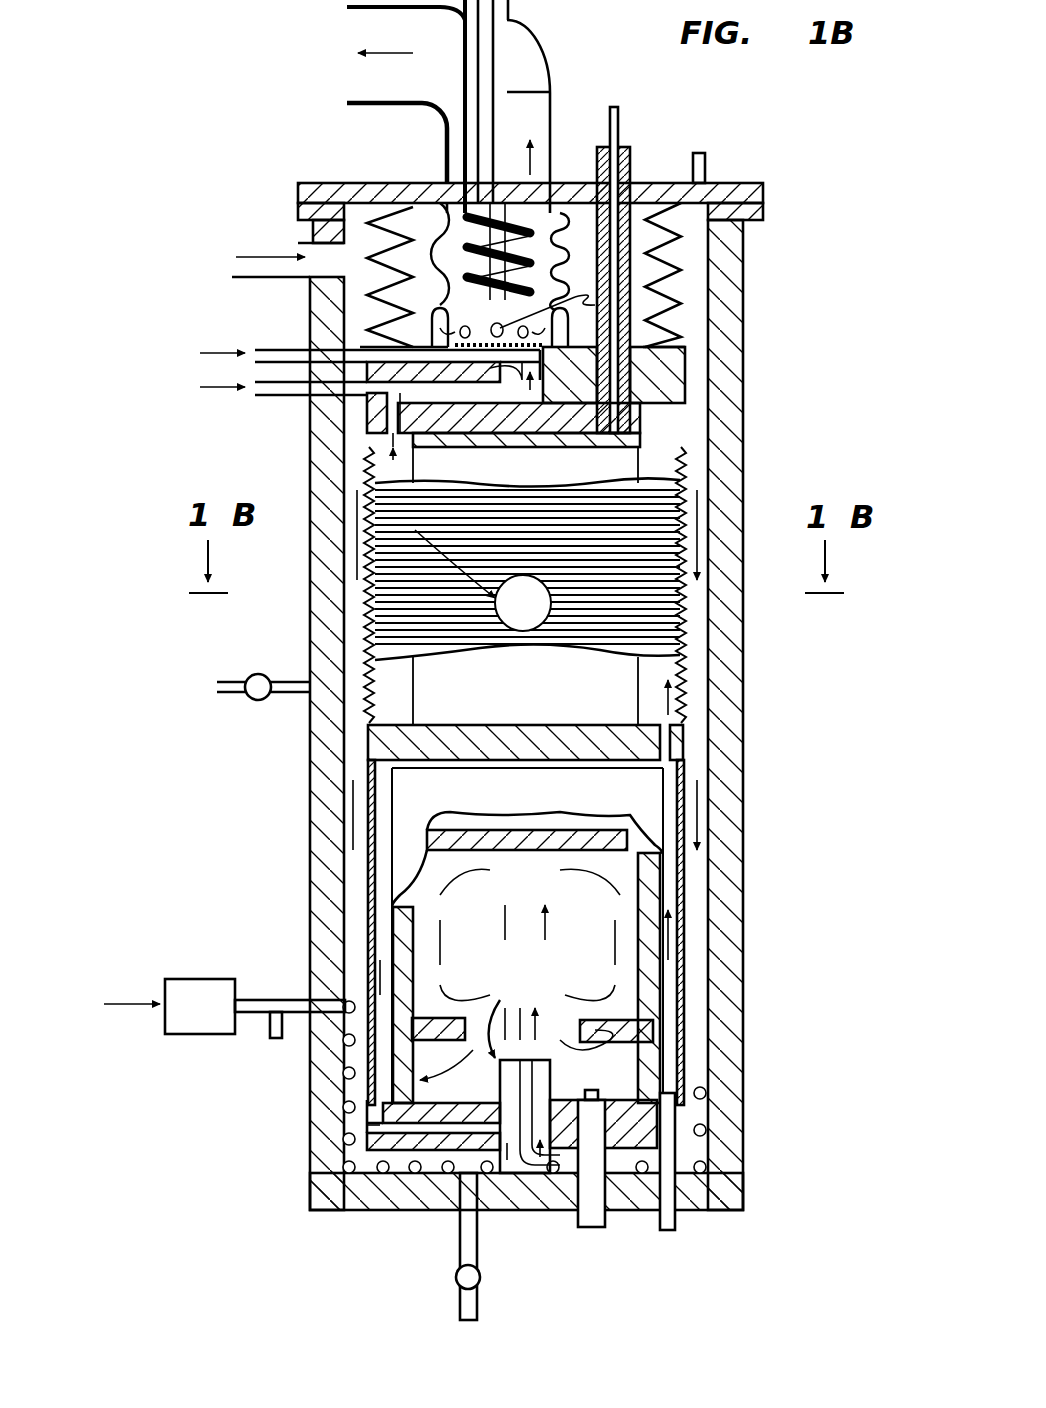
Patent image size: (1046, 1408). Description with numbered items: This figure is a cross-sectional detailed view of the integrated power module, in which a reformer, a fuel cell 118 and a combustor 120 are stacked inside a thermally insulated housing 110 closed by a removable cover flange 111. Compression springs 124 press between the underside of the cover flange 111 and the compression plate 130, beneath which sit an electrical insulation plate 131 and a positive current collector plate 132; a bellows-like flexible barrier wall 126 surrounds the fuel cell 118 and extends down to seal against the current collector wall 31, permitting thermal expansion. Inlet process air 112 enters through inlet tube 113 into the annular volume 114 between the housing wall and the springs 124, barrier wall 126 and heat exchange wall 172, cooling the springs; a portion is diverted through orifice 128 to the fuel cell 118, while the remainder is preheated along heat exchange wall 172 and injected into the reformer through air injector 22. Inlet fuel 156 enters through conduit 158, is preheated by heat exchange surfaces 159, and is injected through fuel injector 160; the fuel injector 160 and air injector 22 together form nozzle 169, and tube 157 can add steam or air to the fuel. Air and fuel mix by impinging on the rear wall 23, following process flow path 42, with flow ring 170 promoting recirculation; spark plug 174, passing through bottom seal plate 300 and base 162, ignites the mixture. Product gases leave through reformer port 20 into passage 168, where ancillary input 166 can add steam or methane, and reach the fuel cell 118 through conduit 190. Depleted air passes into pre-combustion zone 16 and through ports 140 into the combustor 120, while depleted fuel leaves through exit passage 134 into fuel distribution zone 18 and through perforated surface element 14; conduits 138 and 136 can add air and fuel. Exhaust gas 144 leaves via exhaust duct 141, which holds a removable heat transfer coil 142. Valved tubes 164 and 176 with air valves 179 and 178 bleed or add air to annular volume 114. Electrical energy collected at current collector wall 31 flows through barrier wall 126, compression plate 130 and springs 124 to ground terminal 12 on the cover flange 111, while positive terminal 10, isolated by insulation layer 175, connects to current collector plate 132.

The positive terminal 10 is at (620, 112).
The ground terminal 12 is at (710, 165).
The perforated surface element 14 is at (690, 372).
The pre-combustion zone 16 is at (575, 330).
The fuel distribution zone 18 is at (690, 400).
The reformer port 20 is at (690, 1000).
The air injector 22 is at (515, 1107).
The rear wall 23 is at (640, 862).
The current collector wall 31 is at (368, 742).
The process flow path 42 is at (555, 910).
The housing 110 is at (740, 762).
The cover flange 111 is at (766, 192).
The inlet air 112 is at (268, 260).
The inlet tube 113 is at (265, 226).
The annular volume 114 is at (360, 305).
The fuel cell 118 is at (555, 705).
The combustor 120 is at (536, 270).
The compression spring 124 is at (700, 252).
The flexible barrier wall 126 is at (690, 682).
The orifice 128 is at (552, 612).
The compression plate 130 is at (685, 425).
The electrical insulation plate 131 is at (393, 440).
The current collector plate 132 is at (660, 447).
The exit passage 134 is at (393, 420).
The conduit 136 is at (265, 397).
The conduit 138 is at (262, 349).
The port 140 is at (595, 305).
The exhaust duct 141 is at (420, 108).
The heat transfer coil 142 is at (551, 92).
The exhaust gas 144 is at (383, 58).
The inlet fuel 156 is at (118, 1000).
The tube 157 is at (276, 1040).
The conduit 158 is at (210, 986).
The heat exchange surfaces 159 is at (350, 1112).
The fuel injector 160 is at (708, 1088).
The base 162 is at (550, 1212).
The valved tube 164 is at (460, 1248).
The ancillary input 166 is at (682, 1230).
The passage 168 is at (393, 910).
The nozzle 169 is at (500, 1020).
The flow ring 170 is at (660, 1040).
The heat exchange wall 172 is at (370, 868).
The spark plug 174 is at (605, 1228).
The insulation layer 175 is at (634, 162).
The valved tube 176 is at (266, 702).
The air valve 178 is at (255, 676).
The air valve 179 is at (456, 1280).
The conduit 190 is at (683, 745).
The bottom seal plate 300 is at (390, 1142).